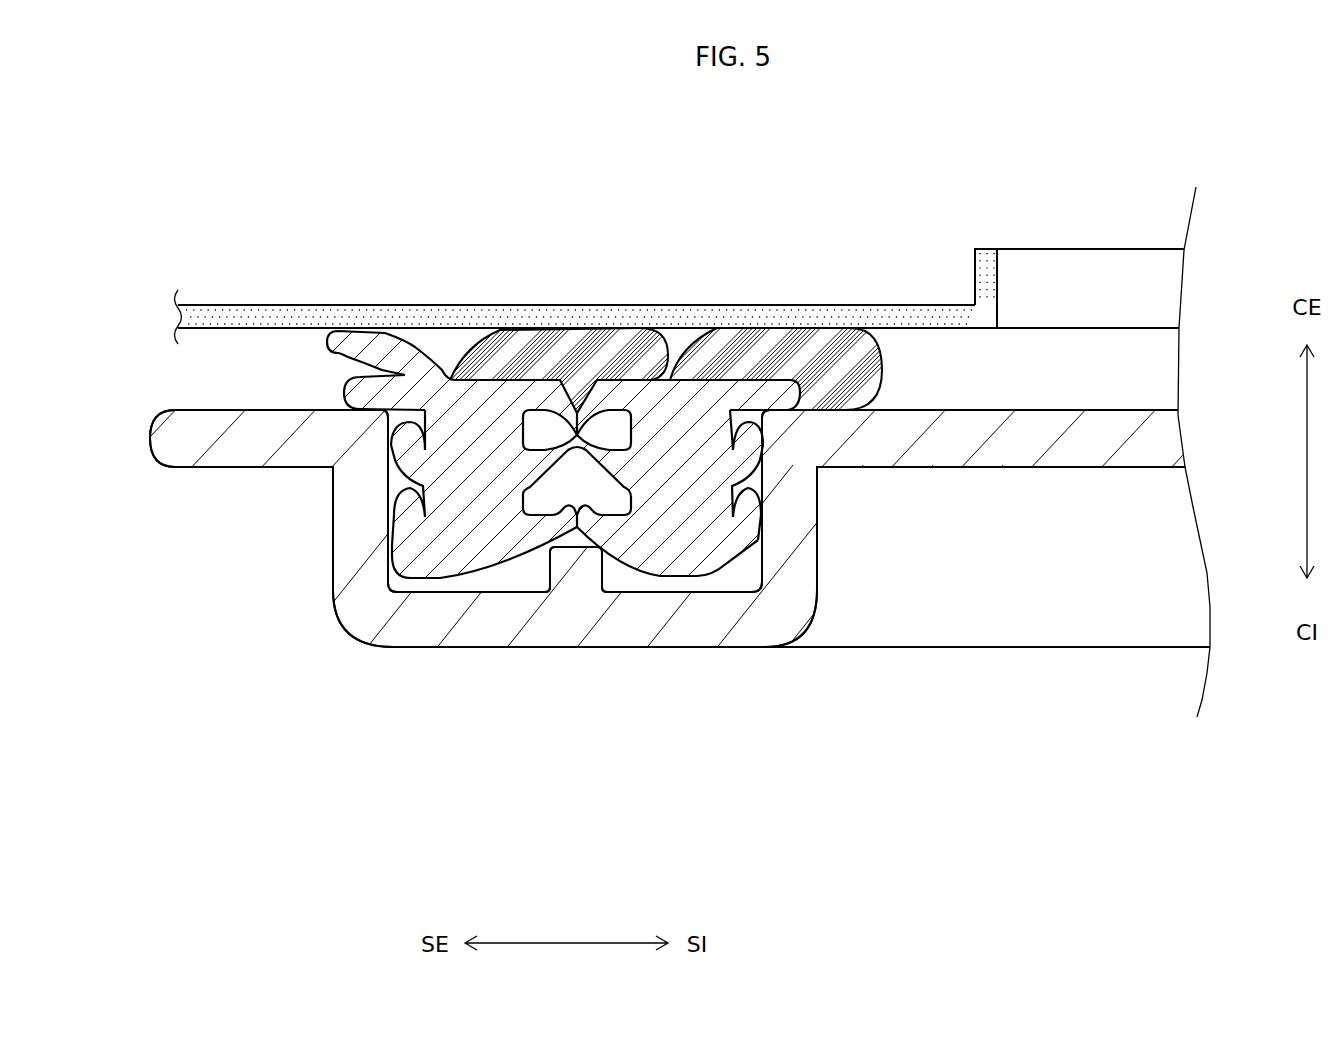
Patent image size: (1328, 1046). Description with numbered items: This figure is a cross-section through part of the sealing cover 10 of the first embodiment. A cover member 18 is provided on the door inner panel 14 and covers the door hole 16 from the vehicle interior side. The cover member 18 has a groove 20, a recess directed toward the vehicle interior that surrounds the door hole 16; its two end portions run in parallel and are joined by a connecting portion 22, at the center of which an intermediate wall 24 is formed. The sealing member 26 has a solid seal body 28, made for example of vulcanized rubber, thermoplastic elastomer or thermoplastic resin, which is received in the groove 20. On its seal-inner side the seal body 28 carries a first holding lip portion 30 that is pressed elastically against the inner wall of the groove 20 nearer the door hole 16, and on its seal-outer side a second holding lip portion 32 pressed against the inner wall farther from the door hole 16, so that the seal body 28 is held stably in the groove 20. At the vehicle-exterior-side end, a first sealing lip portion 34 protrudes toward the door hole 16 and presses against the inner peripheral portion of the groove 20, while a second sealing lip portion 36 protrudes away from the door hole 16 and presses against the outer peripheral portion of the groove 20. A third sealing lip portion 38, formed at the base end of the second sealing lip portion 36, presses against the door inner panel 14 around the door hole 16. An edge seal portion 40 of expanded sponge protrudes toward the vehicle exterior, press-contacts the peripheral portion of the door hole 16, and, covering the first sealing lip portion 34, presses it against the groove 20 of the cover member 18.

The sealing cover 10 is at (577, 512).
The door inner panel 14 is at (505, 305).
The door hole 16 is at (998, 283).
The cover member 18 is at (445, 659).
The groove 20 is at (385, 560).
The connecting portion 22 is at (757, 572).
The intermediate wall 24 is at (607, 562).
The sealing member 26 is at (593, 316).
The seal body 28 is at (490, 545).
The first holding lip portion 30 is at (763, 497).
The second holding lip portion 32 is at (392, 503).
The first sealing lip portion 34 is at (762, 380).
The second sealing lip portion 36 is at (345, 388).
The third sealing lip portion 38 is at (340, 331).
The edge seal portion 40 is at (840, 398).